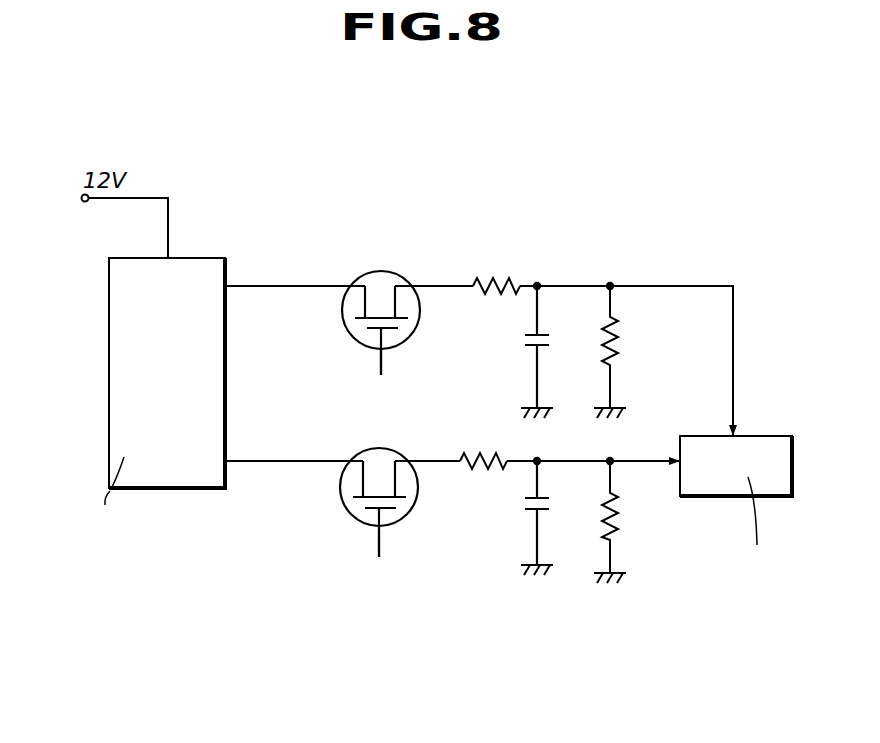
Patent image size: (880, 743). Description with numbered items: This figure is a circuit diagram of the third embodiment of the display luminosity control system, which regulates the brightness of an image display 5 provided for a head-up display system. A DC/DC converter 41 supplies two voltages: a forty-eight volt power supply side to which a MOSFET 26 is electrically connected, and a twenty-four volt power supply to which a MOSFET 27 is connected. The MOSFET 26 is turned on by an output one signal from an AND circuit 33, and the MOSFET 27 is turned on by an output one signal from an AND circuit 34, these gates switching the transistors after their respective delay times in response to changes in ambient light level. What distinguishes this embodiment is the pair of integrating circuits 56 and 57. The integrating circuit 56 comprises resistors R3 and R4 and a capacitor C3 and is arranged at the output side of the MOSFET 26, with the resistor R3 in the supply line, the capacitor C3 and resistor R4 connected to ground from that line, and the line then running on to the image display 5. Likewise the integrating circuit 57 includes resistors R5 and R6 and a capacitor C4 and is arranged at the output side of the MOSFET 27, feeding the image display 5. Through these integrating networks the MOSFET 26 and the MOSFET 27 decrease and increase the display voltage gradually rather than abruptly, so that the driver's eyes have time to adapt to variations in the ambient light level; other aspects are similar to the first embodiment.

The DC/DC converter 41 is at (104, 395).
The MOSFET 26 is at (396, 265).
The AND circuit 34 is at (374, 381).
The MOSFET 27 is at (408, 449).
The AND circuit 33 is at (372, 562).
The integrating circuit 56 is at (586, 276).
The integrating circuit 57 is at (568, 575).
The image display 5 is at (737, 497).
The resistor R3 is at (509, 271).
The resistor R4 is at (622, 347).
The resistor R5 is at (481, 470).
The resistor R6 is at (620, 505).
The capacitor C3 is at (523, 342).
The capacitor C4 is at (523, 507).